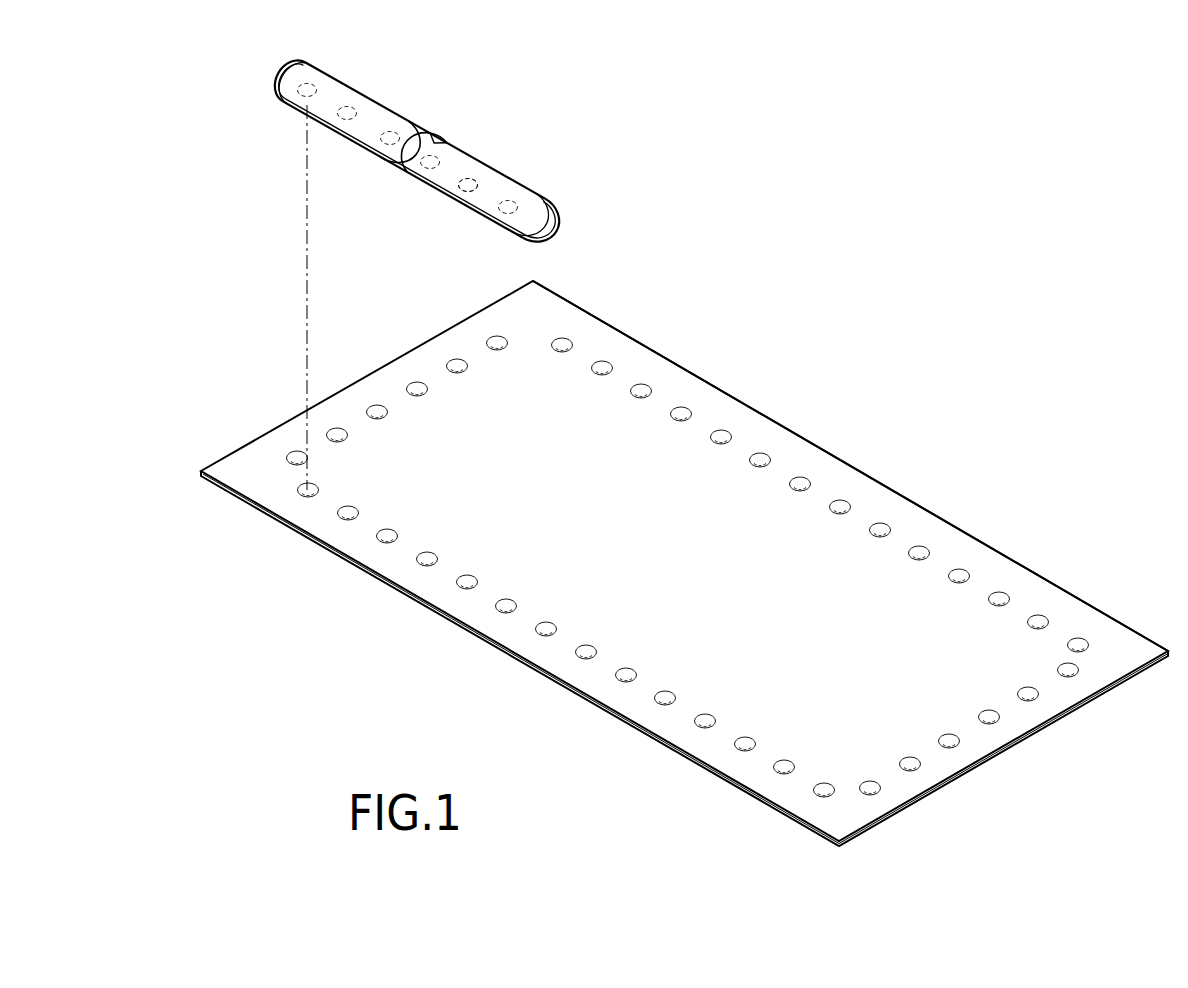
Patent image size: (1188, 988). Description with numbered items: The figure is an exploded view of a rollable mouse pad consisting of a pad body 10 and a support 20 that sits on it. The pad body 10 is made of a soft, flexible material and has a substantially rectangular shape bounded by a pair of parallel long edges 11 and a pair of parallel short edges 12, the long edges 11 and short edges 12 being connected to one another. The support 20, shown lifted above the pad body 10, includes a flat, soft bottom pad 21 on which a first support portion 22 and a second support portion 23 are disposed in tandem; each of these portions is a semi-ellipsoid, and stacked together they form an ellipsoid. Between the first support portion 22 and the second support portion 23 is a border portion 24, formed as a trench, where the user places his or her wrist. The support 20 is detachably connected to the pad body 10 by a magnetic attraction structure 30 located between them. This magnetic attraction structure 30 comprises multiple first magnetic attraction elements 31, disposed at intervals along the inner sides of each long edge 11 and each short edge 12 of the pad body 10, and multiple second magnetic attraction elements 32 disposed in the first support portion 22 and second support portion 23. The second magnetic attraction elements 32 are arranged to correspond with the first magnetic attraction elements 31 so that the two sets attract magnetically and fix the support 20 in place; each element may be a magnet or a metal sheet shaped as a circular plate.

The pad body 10 is at (684, 563).
The long edges 11 is at (803, 436).
The short edges 12 is at (1068, 712).
The support 20 is at (462, 171).
The bottom pad 21 is at (562, 212).
The first support portion 22 is at (500, 185).
The second support portion 23 is at (373, 112).
The border portion 24 is at (442, 124).
The magnetic attraction structure 30 is at (459, 179).
The first magnetic attraction elements 31 is at (418, 385).
The second magnetic attraction elements 32 is at (460, 188).